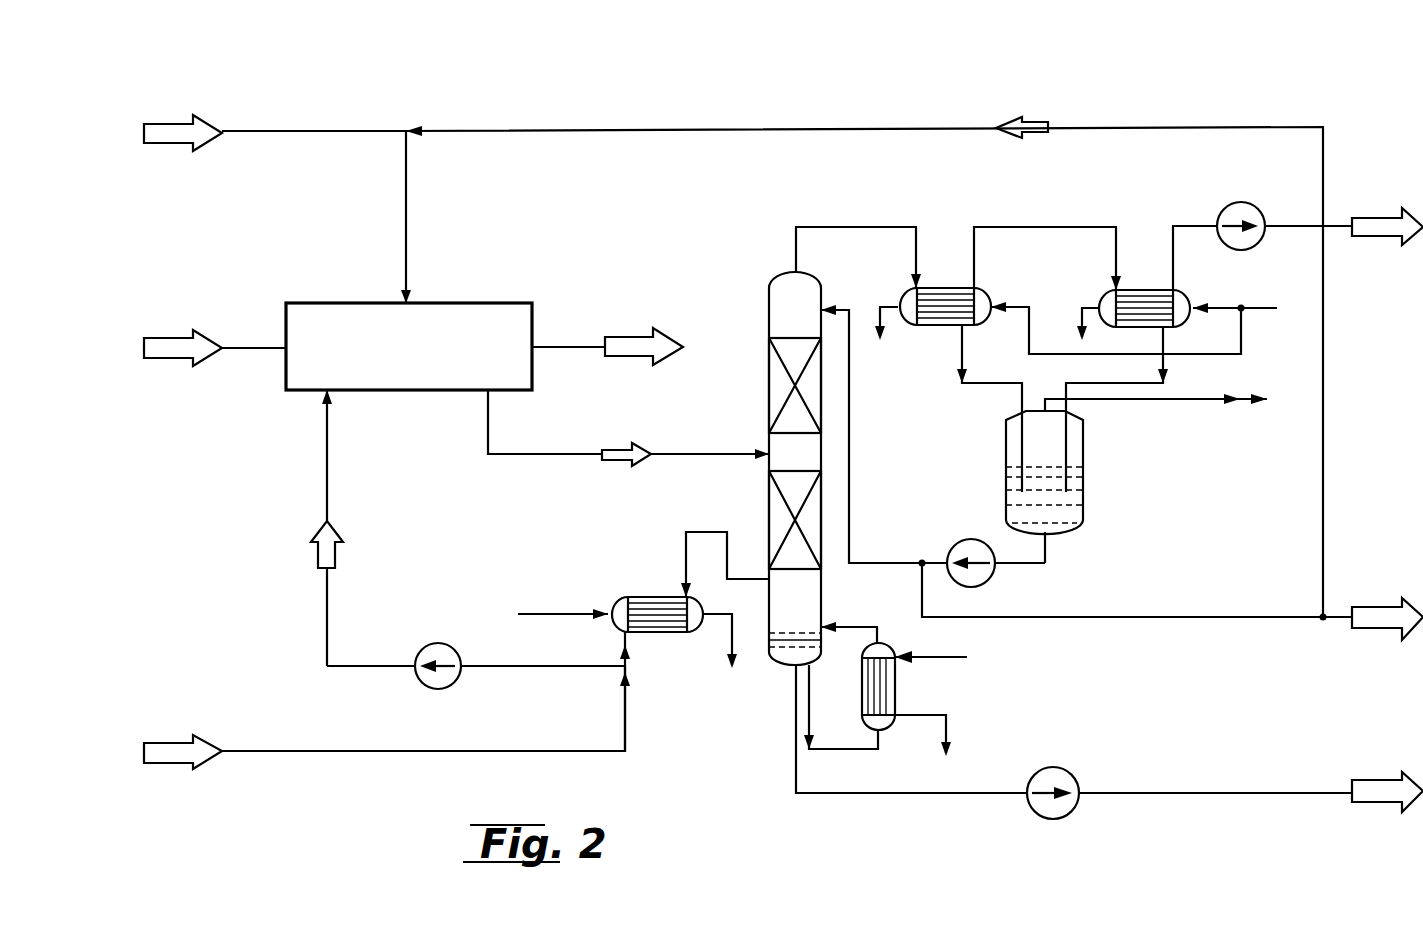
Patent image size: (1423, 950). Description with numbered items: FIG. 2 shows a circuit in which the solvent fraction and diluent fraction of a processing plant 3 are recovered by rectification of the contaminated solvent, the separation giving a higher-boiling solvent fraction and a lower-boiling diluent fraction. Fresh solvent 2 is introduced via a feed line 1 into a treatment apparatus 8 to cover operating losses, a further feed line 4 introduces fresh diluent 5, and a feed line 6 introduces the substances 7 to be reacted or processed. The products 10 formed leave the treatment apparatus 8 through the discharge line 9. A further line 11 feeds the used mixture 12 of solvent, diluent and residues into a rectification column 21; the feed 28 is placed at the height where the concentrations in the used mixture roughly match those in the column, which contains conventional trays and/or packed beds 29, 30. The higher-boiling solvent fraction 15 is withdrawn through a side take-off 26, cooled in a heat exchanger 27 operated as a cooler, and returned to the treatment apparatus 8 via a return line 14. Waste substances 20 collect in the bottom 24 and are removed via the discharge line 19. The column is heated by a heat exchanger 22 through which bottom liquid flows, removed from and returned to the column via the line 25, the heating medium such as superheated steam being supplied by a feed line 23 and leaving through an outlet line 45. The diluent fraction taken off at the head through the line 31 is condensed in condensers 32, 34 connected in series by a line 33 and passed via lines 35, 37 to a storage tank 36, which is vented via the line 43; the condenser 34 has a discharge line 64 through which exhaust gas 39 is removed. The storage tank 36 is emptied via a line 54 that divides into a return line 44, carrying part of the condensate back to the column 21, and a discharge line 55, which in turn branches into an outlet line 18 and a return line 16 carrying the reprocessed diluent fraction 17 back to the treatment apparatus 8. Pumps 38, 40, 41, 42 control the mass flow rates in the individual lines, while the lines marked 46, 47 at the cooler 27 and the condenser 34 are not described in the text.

The feed line 1 is at (360, 753).
The fresh solvent 2 is at (173, 748).
The processing plant 3 is at (380, 78).
The feed line 4 is at (328, 129).
The fresh diluent 5 is at (170, 131).
The feed line 6 is at (278, 345).
The substances to be reacted and/or processed 7 is at (175, 348).
The treatment apparatus 8 is at (298, 378).
The discharge line 9 is at (580, 345).
The products 10 is at (626, 347).
The line 11 is at (500, 455).
The used mixture 12 is at (626, 455).
The return line 14 is at (350, 668).
The solvent fraction 15 is at (318, 553).
The return line 16 is at (1197, 125).
The reprocessed diluent fraction 17 is at (1028, 128).
The outlet line 18 is at (1330, 620).
The discharge line 19 is at (1074, 742).
The waste substances 20 is at (1391, 795).
The rectification column 21 is at (760, 490).
The heat exchanger 22 is at (890, 690).
The feed line 23 is at (940, 656).
The bottom 24 is at (785, 652).
The line 25 is at (870, 627).
The side take-off 26 is at (750, 578).
The heat exchanger 27 is at (660, 610).
The feed 28 is at (768, 454).
The trays and/or packed beds 29 is at (790, 487).
The trays and/or packed beds 30 is at (772, 380).
The line 31 is at (858, 225).
The condenser 32 is at (946, 326).
The line 33 is at (1055, 225).
The condenser 34 is at (1105, 300).
The line 35 is at (992, 385).
The storage tank 36 is at (1012, 492).
The line 37 is at (1120, 385).
The pump 38 is at (1245, 210).
The exhaust gas 39 is at (1380, 228).
The pump 40 is at (960, 548).
The pump 41 is at (1058, 786).
The pump 42 is at (438, 655).
The line 43 is at (1190, 400).
The return line 44 is at (850, 436).
The outlet line 45 is at (948, 725).
The heat exchanger medium inlet 46 is at (572, 612).
The cooling medium inlet line 47 is at (1277, 308).
The line 54 is at (1048, 552).
The discharge line 55 is at (1118, 618).
The discharge line 64 is at (1178, 224).